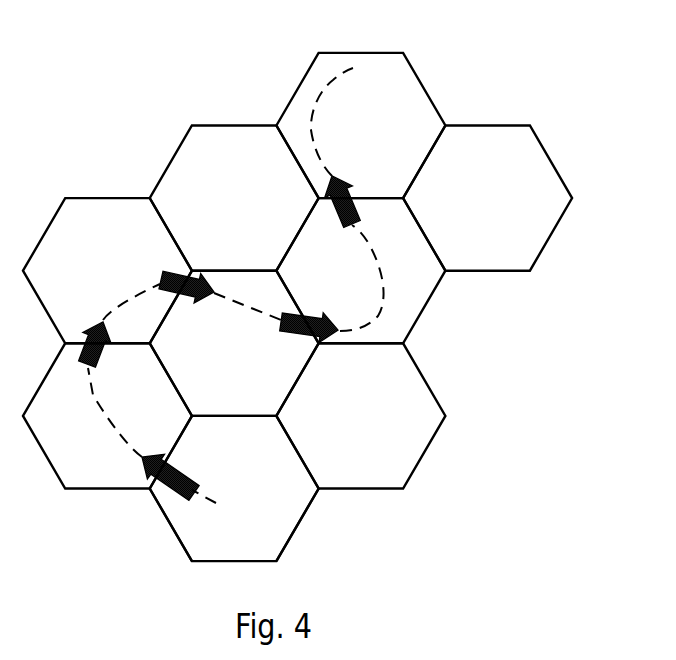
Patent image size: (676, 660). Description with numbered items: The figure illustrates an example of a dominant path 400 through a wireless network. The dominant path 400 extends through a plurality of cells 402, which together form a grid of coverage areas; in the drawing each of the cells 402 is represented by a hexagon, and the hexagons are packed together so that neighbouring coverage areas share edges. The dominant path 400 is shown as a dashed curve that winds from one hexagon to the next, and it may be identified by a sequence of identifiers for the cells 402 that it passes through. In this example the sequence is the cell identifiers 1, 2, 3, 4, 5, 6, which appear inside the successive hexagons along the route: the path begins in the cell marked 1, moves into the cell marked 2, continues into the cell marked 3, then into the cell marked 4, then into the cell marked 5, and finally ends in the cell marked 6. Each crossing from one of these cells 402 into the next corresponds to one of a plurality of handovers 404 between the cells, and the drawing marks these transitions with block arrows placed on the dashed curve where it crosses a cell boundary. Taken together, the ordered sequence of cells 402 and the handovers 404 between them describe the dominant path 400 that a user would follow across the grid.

The dominant path 400 is at (312, 100).
The cells 402 is at (295, 525).
The handovers 404 is at (163, 483).
The cell identifier 1 is at (234, 488).
The cell identifier 2 is at (107, 415).
The cell identifier 3 is at (107, 270).
The cell identifier 4 is at (234, 343).
The cell identifier 5 is at (360, 270).
The cell identifier 6 is at (360, 125).